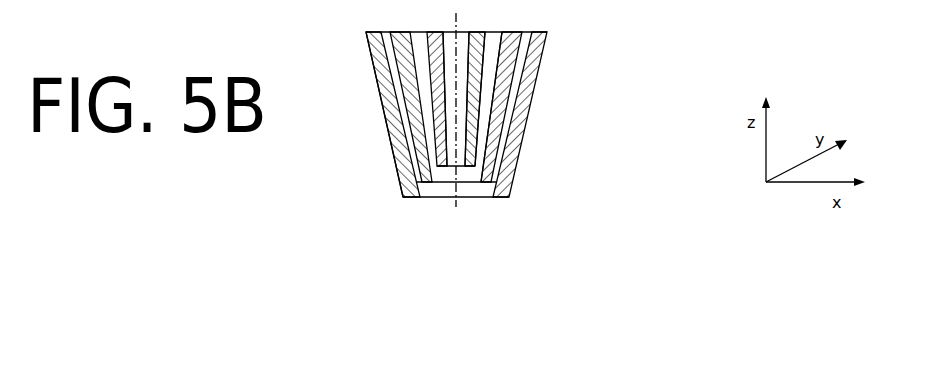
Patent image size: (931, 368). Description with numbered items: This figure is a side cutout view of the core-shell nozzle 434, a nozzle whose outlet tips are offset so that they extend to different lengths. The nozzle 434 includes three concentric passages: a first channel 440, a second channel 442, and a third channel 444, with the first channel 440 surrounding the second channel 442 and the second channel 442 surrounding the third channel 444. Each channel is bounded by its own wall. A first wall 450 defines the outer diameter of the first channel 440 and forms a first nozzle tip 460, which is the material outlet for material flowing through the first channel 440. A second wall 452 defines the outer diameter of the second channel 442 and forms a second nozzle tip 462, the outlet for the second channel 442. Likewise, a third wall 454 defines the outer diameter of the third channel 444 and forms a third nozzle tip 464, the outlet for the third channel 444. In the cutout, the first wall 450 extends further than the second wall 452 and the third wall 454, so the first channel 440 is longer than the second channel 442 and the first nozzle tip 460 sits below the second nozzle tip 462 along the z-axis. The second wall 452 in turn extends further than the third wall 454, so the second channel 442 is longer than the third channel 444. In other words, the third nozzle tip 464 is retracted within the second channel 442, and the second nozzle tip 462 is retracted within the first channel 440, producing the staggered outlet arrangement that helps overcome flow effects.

The core-shell nozzle 434 is at (490, 160).
The first channel 440 is at (525, 52).
The second channel 442 is at (493, 85).
The third channel 444 is at (457, 128).
The first wall 450 is at (387, 122).
The second wall 452 is at (408, 88).
The third wall 454 is at (435, 49).
The first nozzle tip 460 is at (407, 198).
The second nozzle tip 462 is at (428, 183).
The third nozzle tip 464 is at (442, 166).